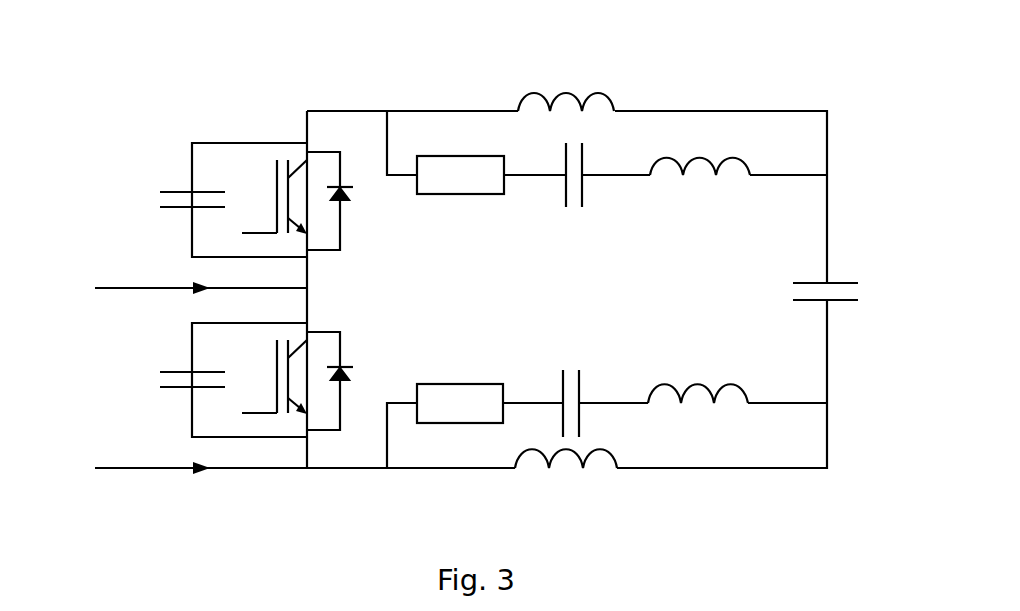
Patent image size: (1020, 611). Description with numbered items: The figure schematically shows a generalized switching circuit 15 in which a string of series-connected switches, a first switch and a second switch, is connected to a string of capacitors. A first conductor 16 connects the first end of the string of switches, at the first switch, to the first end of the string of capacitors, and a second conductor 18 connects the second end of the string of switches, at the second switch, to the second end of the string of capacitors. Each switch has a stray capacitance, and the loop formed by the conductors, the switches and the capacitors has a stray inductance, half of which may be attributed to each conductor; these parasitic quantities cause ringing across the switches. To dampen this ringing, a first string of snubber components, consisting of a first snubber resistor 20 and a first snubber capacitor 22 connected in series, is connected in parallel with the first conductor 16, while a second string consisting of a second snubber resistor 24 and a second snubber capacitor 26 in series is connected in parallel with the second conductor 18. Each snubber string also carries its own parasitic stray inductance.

The switching circuit 15 is at (128, 126).
The first conductor 16 is at (718, 111).
The second conductor 18 is at (702, 468).
The first snubber resistor 20 is at (460, 202).
The first snubber capacitor 22 is at (574, 195).
The second snubber resistor 24 is at (460, 384).
The second snubber capacitor 26 is at (574, 391).